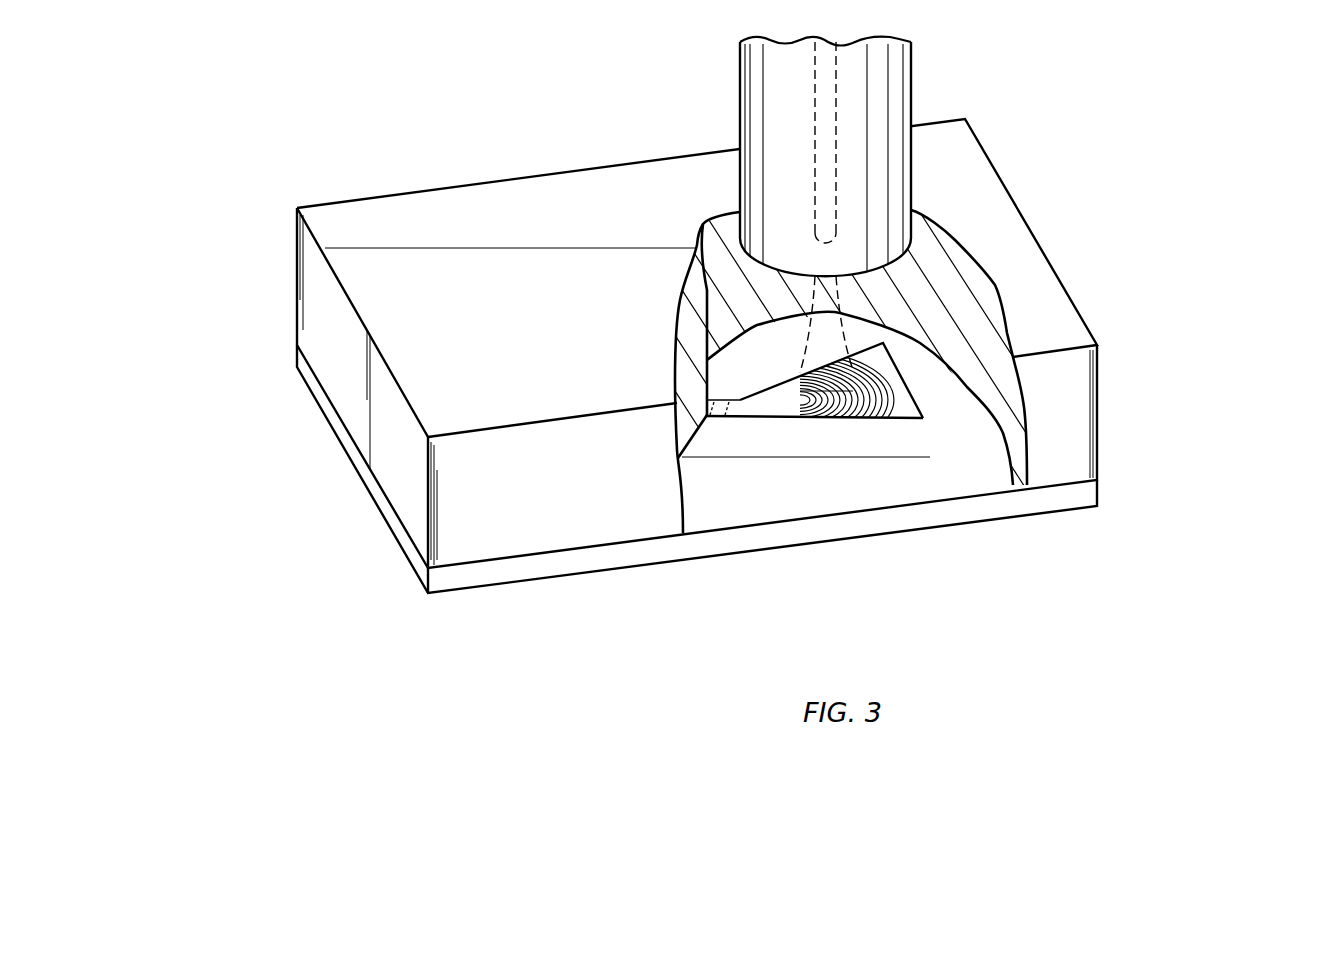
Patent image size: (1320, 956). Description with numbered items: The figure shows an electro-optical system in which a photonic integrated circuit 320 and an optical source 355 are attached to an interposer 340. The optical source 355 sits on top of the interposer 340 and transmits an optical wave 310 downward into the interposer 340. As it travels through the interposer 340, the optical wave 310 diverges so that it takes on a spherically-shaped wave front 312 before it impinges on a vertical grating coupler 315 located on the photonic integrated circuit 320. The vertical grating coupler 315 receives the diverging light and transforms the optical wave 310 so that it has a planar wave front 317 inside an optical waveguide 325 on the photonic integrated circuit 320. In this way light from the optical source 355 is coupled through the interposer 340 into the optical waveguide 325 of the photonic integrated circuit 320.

The interposer 340 is at (333, 230).
The optical source 355 is at (738, 92).
The optical wave 310 is at (847, 308).
The spherically-shaped wave front 312 is at (858, 389).
The planar wave front 317 is at (712, 396).
The optical waveguide 325 is at (728, 418).
The vertical grating coupler 315 is at (857, 418).
The photonic integrated circuit 320 is at (960, 467).